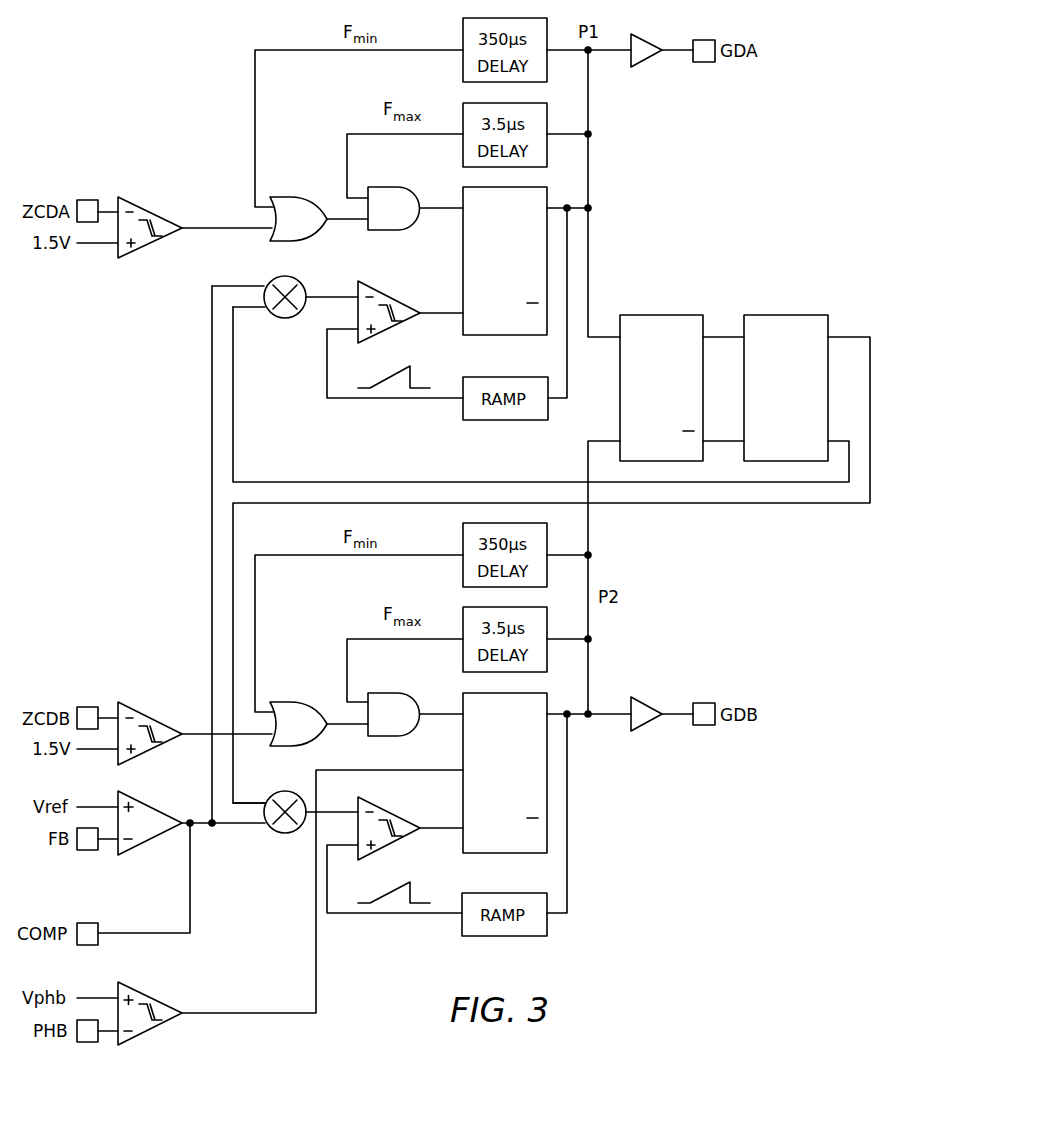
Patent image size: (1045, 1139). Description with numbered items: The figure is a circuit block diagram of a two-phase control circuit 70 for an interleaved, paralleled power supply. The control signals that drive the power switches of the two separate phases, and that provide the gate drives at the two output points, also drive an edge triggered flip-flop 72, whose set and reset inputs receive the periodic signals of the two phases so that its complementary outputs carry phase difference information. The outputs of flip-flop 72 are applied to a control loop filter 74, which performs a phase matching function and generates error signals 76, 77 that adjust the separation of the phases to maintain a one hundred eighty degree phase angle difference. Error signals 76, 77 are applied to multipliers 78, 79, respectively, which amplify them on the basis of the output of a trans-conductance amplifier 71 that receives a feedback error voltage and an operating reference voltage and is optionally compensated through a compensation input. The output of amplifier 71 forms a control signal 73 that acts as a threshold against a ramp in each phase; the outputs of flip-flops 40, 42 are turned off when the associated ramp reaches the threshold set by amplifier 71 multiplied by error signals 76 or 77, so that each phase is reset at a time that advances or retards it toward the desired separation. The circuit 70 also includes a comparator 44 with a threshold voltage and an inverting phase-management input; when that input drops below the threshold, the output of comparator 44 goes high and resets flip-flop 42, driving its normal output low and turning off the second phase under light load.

The control circuit 70 is at (113, 62).
The flip-flop 40 is at (463, 261).
The flip-flop 42 is at (463, 797).
The comparator 44 is at (150, 1035).
The trans-conductance amplifier 71 is at (150, 845).
The edge triggered flip-flop 72 is at (662, 313).
The control signal 73 is at (210, 487).
The control loop filter 74 is at (786, 313).
The error signal 76 is at (380, 480).
The error signal 77 is at (850, 333).
The multiplier 78 is at (285, 318).
The multiplier 79 is at (285, 834).